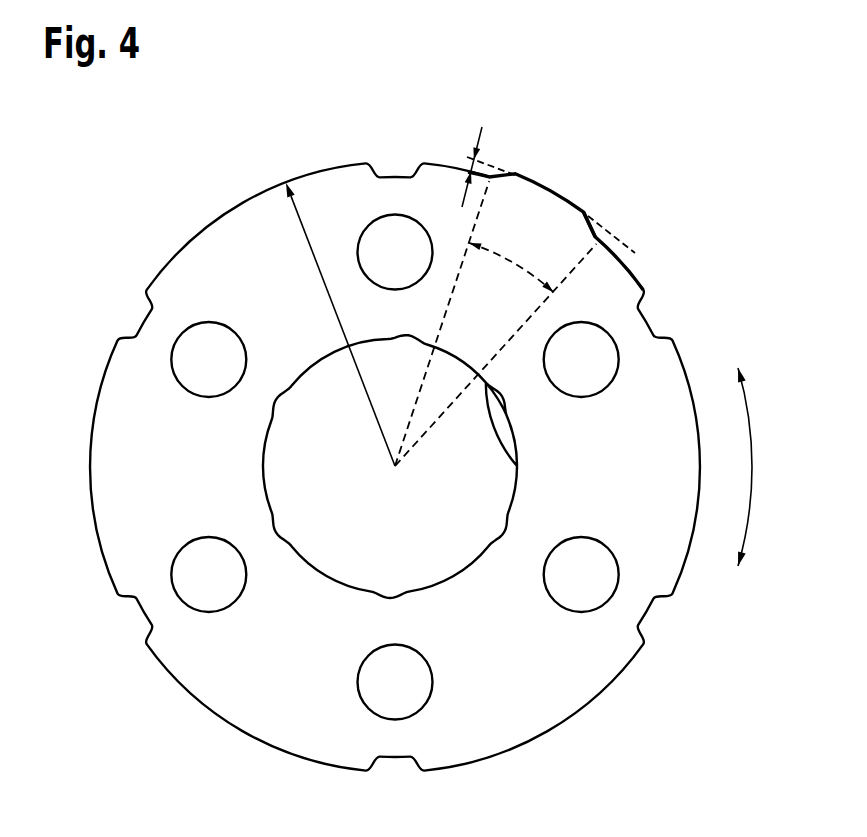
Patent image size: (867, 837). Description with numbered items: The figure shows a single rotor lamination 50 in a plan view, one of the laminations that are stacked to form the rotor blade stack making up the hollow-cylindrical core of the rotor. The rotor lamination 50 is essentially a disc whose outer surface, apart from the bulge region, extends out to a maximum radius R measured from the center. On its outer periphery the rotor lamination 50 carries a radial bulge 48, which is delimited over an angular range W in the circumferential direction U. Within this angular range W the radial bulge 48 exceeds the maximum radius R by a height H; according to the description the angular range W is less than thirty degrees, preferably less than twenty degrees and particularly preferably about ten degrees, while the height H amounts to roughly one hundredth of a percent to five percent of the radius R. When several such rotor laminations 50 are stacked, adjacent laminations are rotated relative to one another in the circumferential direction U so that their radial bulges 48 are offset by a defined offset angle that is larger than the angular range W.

The radial bulge 48 is at (555, 203).
The rotor lamination 50 is at (598, 278).
The maximum radius R is at (307, 243).
The height H is at (465, 160).
The angular range W is at (509, 257).
The circumferential direction U is at (761, 467).